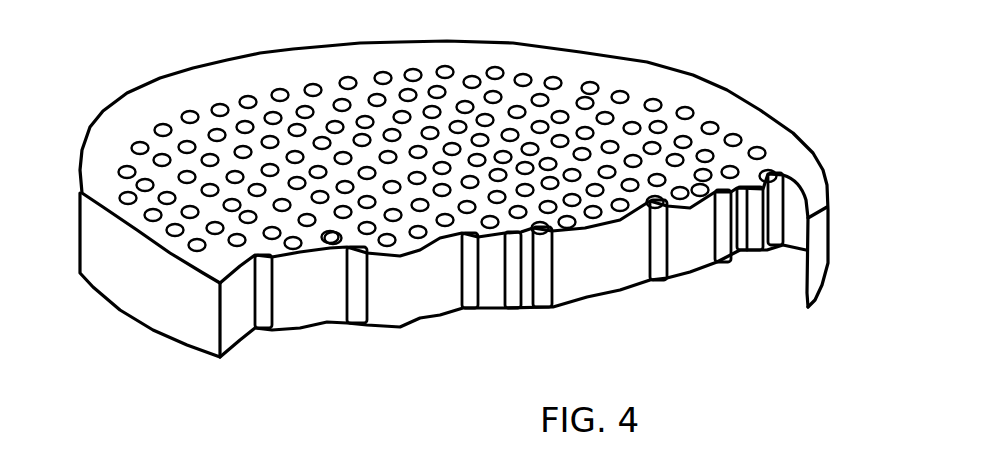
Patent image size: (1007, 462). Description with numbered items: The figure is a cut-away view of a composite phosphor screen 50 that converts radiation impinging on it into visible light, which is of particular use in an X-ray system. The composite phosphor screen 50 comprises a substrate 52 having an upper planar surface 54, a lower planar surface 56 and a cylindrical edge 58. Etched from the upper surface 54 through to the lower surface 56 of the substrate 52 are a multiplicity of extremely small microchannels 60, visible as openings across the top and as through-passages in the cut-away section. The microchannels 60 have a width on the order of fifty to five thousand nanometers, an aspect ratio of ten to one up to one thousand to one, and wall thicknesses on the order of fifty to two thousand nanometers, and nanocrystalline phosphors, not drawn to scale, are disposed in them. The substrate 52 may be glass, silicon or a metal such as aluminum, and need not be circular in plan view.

The composite phosphor screen 50 is at (449, 192).
The substrate 52 is at (838, 218).
The upper planar surface 54 is at (454, 174).
The lower planar surface 56 is at (514, 271).
The cylindrical edge 58 is at (125, 274).
The microchannels 60 is at (448, 133).